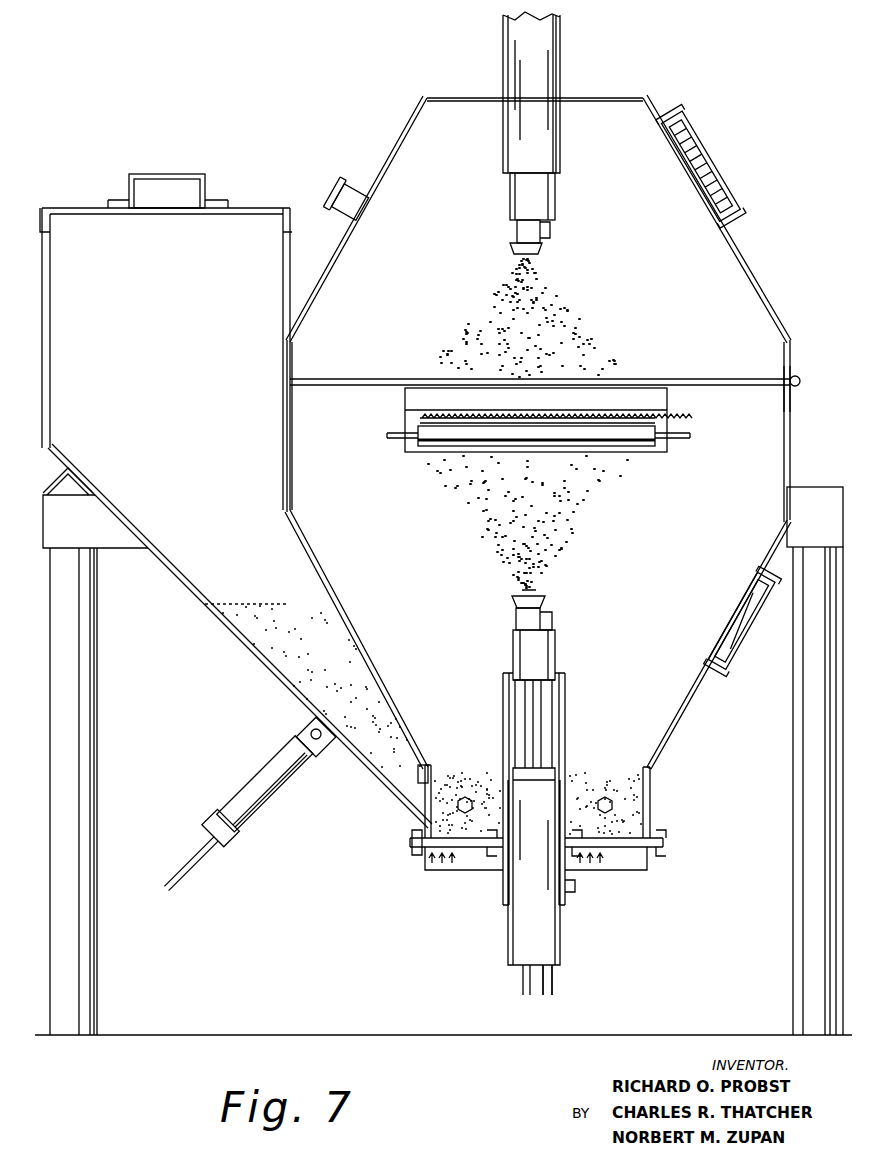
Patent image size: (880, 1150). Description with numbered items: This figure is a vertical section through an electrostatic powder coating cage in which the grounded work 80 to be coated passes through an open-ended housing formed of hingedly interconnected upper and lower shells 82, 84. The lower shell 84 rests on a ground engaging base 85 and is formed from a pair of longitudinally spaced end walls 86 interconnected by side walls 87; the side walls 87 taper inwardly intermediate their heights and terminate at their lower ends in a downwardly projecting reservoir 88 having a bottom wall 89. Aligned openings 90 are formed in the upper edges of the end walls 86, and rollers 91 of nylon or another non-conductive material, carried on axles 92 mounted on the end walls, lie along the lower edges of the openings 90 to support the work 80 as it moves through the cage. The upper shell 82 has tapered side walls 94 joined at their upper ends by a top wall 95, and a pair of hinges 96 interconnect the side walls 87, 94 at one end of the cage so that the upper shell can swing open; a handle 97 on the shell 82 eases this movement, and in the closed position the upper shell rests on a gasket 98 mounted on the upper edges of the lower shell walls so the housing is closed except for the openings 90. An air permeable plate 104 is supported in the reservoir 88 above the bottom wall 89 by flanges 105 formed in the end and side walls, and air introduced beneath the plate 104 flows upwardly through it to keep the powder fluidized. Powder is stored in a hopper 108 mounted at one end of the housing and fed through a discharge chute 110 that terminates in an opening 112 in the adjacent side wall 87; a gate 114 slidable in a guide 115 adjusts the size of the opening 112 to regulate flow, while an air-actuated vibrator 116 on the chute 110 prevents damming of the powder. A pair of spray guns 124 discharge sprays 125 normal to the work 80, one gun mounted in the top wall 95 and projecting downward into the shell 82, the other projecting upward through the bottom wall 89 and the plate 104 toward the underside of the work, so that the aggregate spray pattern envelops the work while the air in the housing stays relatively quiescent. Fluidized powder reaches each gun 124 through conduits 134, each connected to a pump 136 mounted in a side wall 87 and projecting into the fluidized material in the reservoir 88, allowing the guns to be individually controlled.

The grounded work 80 is at (545, 414).
The upper shell 82 is at (762, 226).
The lower shell 84 is at (705, 714).
The ground engaging base 85 is at (92, 706).
The end walls 86 is at (723, 621).
The side walls 87 is at (372, 660).
The reservoir 88 is at (656, 786).
The bottom wall 89 is at (645, 866).
The openings 90 is at (660, 420).
The rollers 91 is at (650, 448).
The axles 92 is at (676, 440).
The tapered side walls 94 is at (402, 146).
The top wall 95 is at (598, 98).
The hinges 96 is at (804, 380).
The handle 97 is at (337, 192).
The gasket 98 is at (706, 380).
The air permeable plate 104 is at (664, 848).
The flanges 105 is at (666, 836).
The hopper 108 is at (230, 470).
The discharge chute 110 is at (246, 645).
The opening 112 is at (435, 772).
The gate 114 is at (422, 800).
The guide 115 is at (422, 772).
The air-actuated vibrator 116 is at (242, 780).
The spray guns 124 is at (556, 218).
The sprays 125 is at (614, 328).
The conduits 134 is at (522, 980).
The pump 136 is at (492, 757).